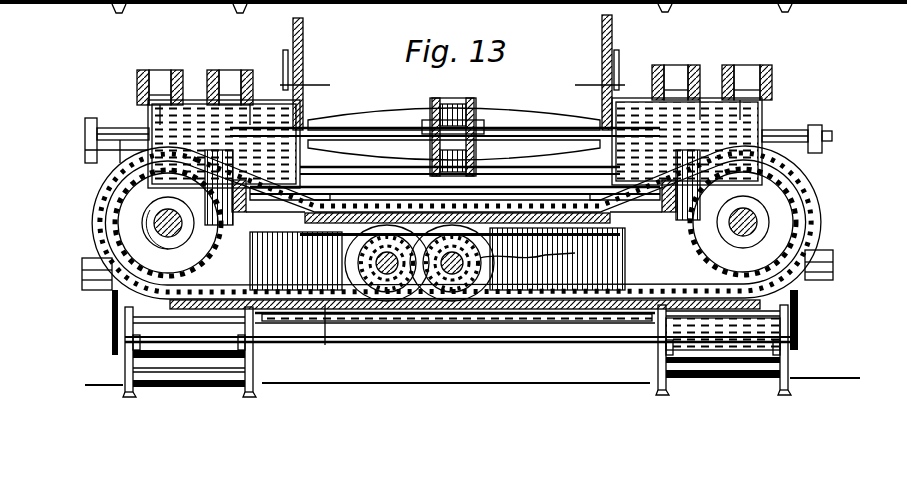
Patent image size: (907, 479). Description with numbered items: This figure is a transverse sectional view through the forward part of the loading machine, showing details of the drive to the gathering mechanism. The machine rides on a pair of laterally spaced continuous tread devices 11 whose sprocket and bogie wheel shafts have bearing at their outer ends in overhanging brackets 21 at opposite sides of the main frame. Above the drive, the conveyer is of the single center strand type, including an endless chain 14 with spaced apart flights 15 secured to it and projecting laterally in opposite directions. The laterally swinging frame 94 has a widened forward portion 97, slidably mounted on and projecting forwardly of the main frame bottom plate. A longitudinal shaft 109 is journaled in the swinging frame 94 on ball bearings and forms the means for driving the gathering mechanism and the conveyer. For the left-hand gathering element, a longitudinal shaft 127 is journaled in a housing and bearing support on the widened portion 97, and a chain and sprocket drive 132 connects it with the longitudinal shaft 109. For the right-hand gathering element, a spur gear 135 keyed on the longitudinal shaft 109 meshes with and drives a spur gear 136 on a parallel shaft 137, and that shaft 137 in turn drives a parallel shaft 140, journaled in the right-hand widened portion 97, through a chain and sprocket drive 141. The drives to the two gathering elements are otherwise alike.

The continuous tread device 11 is at (254, 360).
The endless chain 14 is at (460, 104).
The flight 15 is at (524, 130).
The overhanging bracket 21 is at (112, 336).
The laterally swinging frame 94 is at (547, 325).
The widened forward portion 97 is at (821, 162).
The longitudinal shaft 109 is at (380, 305).
The longitudinal shaft 127 is at (158, 222).
The chain and sprocket drive 132 is at (325, 310).
The spur gear 135 is at (420, 310).
The spur gear 136 is at (448, 305).
The parallel shaft 137 is at (543, 255).
The parallel shaft 140 is at (760, 214).
The chain and sprocket drive 141 is at (818, 242).